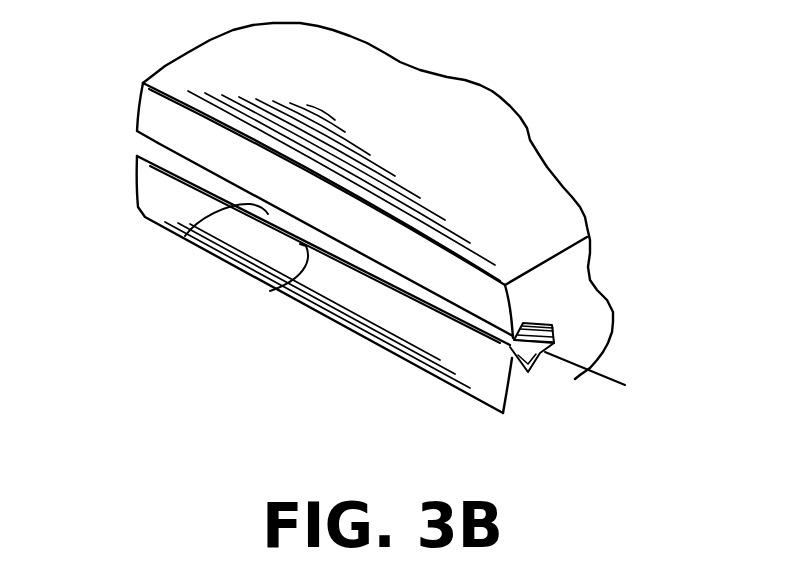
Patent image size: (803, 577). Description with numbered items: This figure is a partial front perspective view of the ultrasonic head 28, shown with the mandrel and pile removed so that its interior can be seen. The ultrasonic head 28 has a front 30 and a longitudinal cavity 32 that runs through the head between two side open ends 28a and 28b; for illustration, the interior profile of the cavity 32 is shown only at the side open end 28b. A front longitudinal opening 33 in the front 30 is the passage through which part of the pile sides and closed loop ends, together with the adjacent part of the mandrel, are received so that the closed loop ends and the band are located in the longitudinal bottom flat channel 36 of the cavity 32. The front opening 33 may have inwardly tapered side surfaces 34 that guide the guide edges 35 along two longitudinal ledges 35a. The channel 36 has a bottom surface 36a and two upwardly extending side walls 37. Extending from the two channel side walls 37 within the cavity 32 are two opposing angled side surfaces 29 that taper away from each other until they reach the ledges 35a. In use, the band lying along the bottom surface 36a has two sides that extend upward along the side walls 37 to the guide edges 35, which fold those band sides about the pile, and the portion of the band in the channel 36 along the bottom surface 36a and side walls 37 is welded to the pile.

The ultrasonic head 28 is at (567, 190).
The side open end 28a is at (150, 146).
The side open end 28b is at (548, 346).
The angled side surfaces 29 is at (523, 323).
The front 30 is at (157, 201).
The longitudinal cavity 32 is at (552, 364).
The front longitudinal opening 33 is at (190, 233).
The inwardly tapered side surfaces 34 is at (343, 241).
The guide edges 35 is at (525, 357).
The longitudinal ledges 35a is at (520, 290).
The bottom flat channel 36 is at (553, 335).
The bottom surface 36a is at (552, 325).
The side walls 37 is at (549, 323).